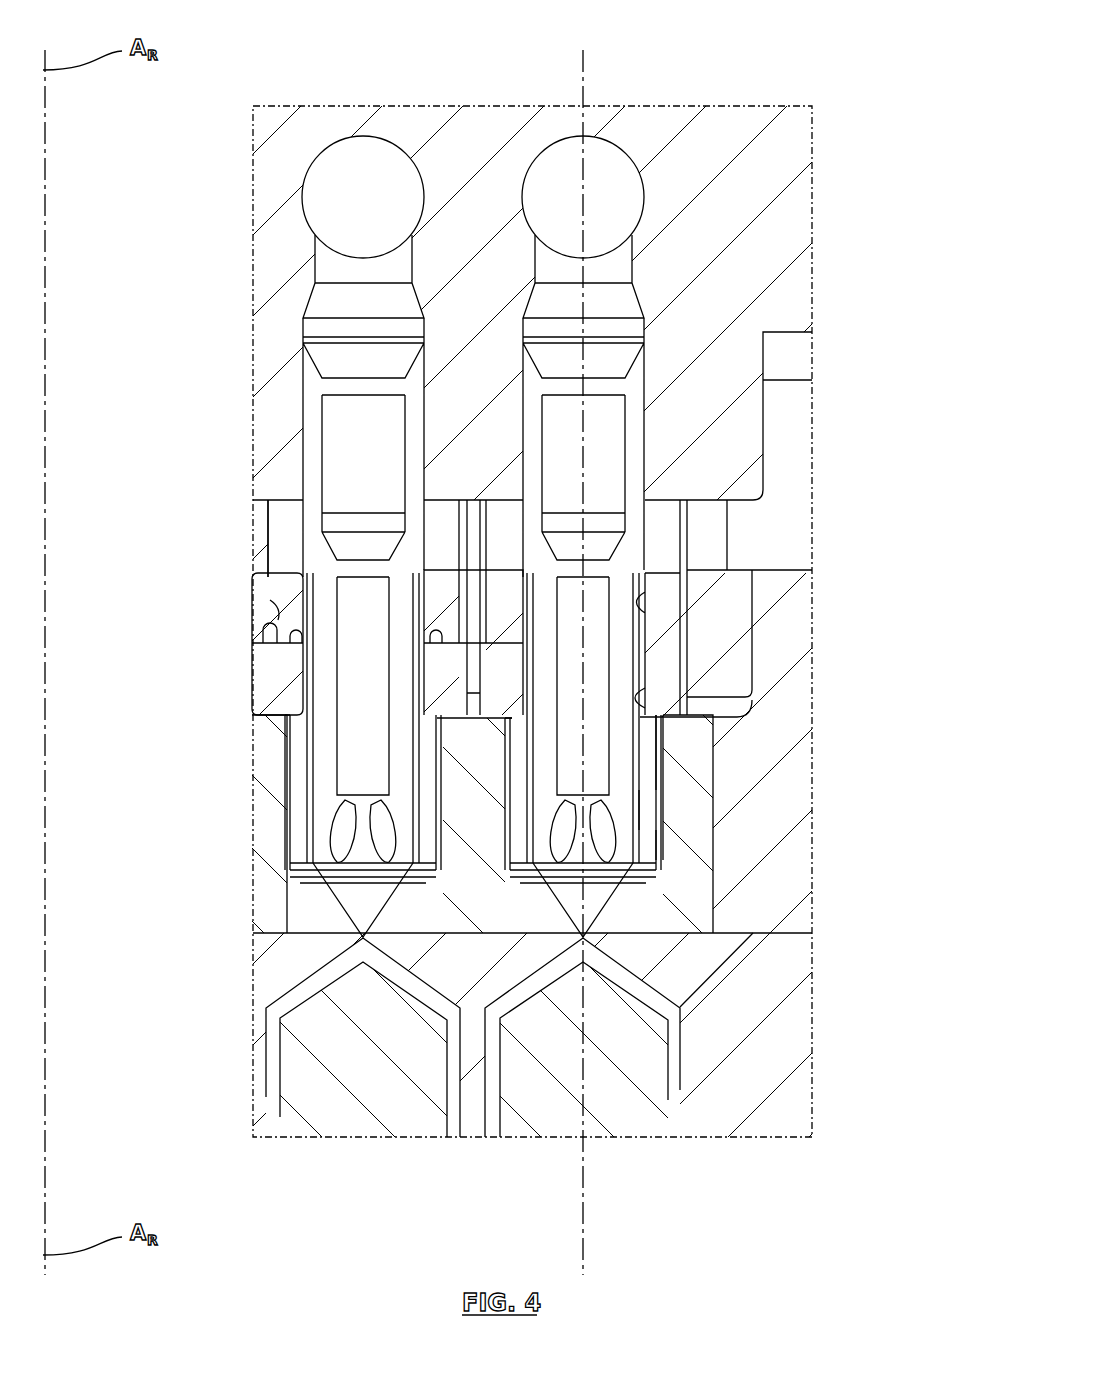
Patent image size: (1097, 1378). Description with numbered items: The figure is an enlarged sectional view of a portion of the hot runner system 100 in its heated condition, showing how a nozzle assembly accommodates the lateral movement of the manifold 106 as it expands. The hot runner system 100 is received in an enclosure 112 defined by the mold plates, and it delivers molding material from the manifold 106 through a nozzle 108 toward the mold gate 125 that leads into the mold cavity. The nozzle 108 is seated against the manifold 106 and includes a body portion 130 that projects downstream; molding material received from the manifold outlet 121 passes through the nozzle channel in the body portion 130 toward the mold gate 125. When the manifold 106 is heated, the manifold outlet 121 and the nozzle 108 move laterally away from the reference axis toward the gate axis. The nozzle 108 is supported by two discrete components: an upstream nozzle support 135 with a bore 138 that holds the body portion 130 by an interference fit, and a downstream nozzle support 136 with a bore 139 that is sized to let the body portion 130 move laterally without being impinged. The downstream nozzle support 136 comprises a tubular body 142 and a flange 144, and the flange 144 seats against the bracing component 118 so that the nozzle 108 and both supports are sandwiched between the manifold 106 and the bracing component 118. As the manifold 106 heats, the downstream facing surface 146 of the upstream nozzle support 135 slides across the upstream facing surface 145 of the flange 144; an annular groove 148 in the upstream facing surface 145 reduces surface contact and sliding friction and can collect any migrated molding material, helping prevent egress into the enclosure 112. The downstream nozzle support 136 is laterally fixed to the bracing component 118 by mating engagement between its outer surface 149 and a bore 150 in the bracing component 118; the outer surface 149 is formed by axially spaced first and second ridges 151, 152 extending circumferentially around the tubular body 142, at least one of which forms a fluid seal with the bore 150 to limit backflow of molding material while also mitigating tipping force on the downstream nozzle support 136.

The hot runner system 100 is at (901, 74).
The manifold 106 is at (270, 155).
The manifold outlet 121 is at (345, 248).
The enclosure 112 is at (778, 455).
The nozzle 108 is at (275, 585).
The flange 144 is at (262, 672).
The upstream nozzle support 135 is at (277, 613).
The annular groove 148 is at (275, 640).
The downstream nozzle support 136 is at (290, 712).
The tubular body 142 is at (297, 818).
The outer surface 149 is at (283, 852).
The mold gate 125 is at (365, 937).
The bracing component 118 is at (267, 768).
The downstream facing surface 146 is at (424, 655).
The upstream facing surface 145 is at (295, 640).
The body portion 130 is at (622, 632).
The bore 138 is at (646, 590).
The bore 139 is at (630, 700).
The second ridge 152 is at (663, 775).
The bore 150 is at (655, 808).
The first ridge 151 is at (660, 843).